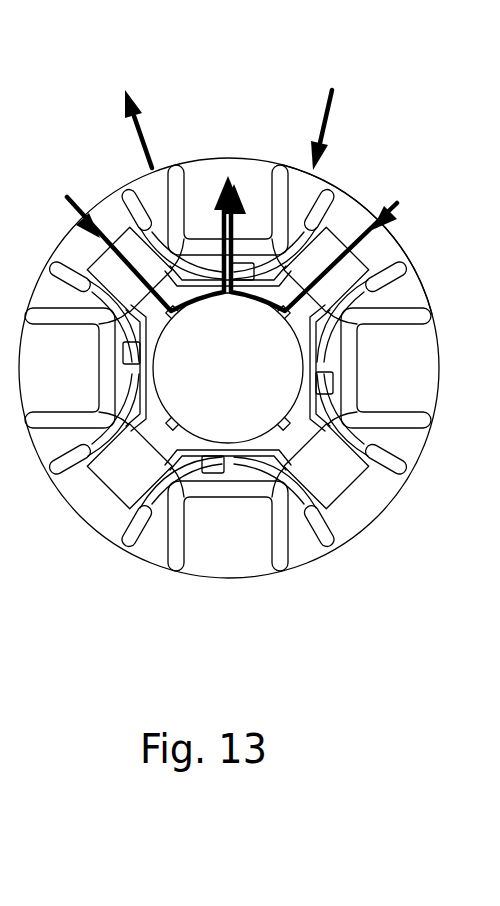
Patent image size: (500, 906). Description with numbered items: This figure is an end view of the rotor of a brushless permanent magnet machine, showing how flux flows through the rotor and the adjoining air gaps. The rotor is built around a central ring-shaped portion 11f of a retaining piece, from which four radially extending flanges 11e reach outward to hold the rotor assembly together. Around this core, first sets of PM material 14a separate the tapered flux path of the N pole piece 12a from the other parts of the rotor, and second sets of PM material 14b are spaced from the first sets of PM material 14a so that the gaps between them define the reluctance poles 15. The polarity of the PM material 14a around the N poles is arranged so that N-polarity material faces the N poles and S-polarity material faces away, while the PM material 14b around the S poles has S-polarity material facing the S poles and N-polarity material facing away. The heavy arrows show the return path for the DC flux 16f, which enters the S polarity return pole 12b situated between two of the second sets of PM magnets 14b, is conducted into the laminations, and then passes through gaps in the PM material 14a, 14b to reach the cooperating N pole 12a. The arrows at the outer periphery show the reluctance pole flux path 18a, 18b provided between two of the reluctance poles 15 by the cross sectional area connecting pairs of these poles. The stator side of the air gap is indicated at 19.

The radially extending flange 11e is at (358, 259).
The central ring-shaped portion 11f is at (173, 296).
The N pole piece 12a is at (254, 158).
The S polarity return pole 12b is at (355, 196).
The first set of PM material 14a is at (181, 176).
The second set of PM material 14b is at (132, 186).
The reluctance pole 15 is at (411, 298).
The DC flux path 16f is at (393, 205).
The reluctance pole flux path 18a is at (326, 128).
The reluctance pole flux path 18b is at (142, 122).
The stator 19 is at (494, 336).